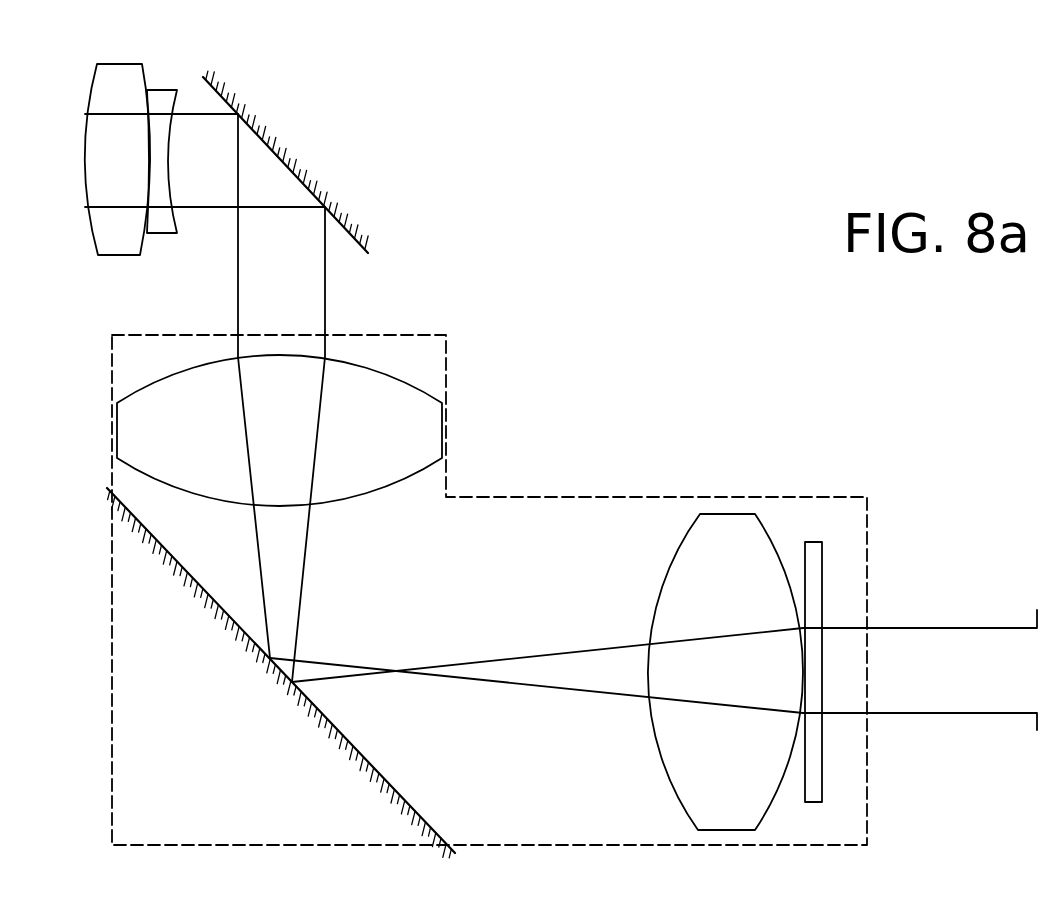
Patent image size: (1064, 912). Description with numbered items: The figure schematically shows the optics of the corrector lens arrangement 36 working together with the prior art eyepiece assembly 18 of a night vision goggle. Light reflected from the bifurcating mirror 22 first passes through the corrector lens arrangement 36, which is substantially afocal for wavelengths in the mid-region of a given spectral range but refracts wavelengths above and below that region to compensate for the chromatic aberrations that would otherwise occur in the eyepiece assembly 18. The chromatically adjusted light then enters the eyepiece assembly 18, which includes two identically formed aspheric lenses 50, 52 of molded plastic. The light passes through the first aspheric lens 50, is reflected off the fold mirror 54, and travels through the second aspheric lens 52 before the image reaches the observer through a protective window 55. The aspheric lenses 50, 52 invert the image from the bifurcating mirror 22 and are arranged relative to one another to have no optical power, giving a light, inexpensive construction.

The eyepiece assembly 18 is at (588, 497).
The bifurcating mirror 22 is at (352, 143).
The corrector lens arrangement 36 is at (125, 270).
The first aspheric lens 50 is at (382, 430).
The second aspheric lens 52 is at (726, 547).
The fold mirror 54 is at (232, 725).
The plate / filter 55 is at (813, 574).